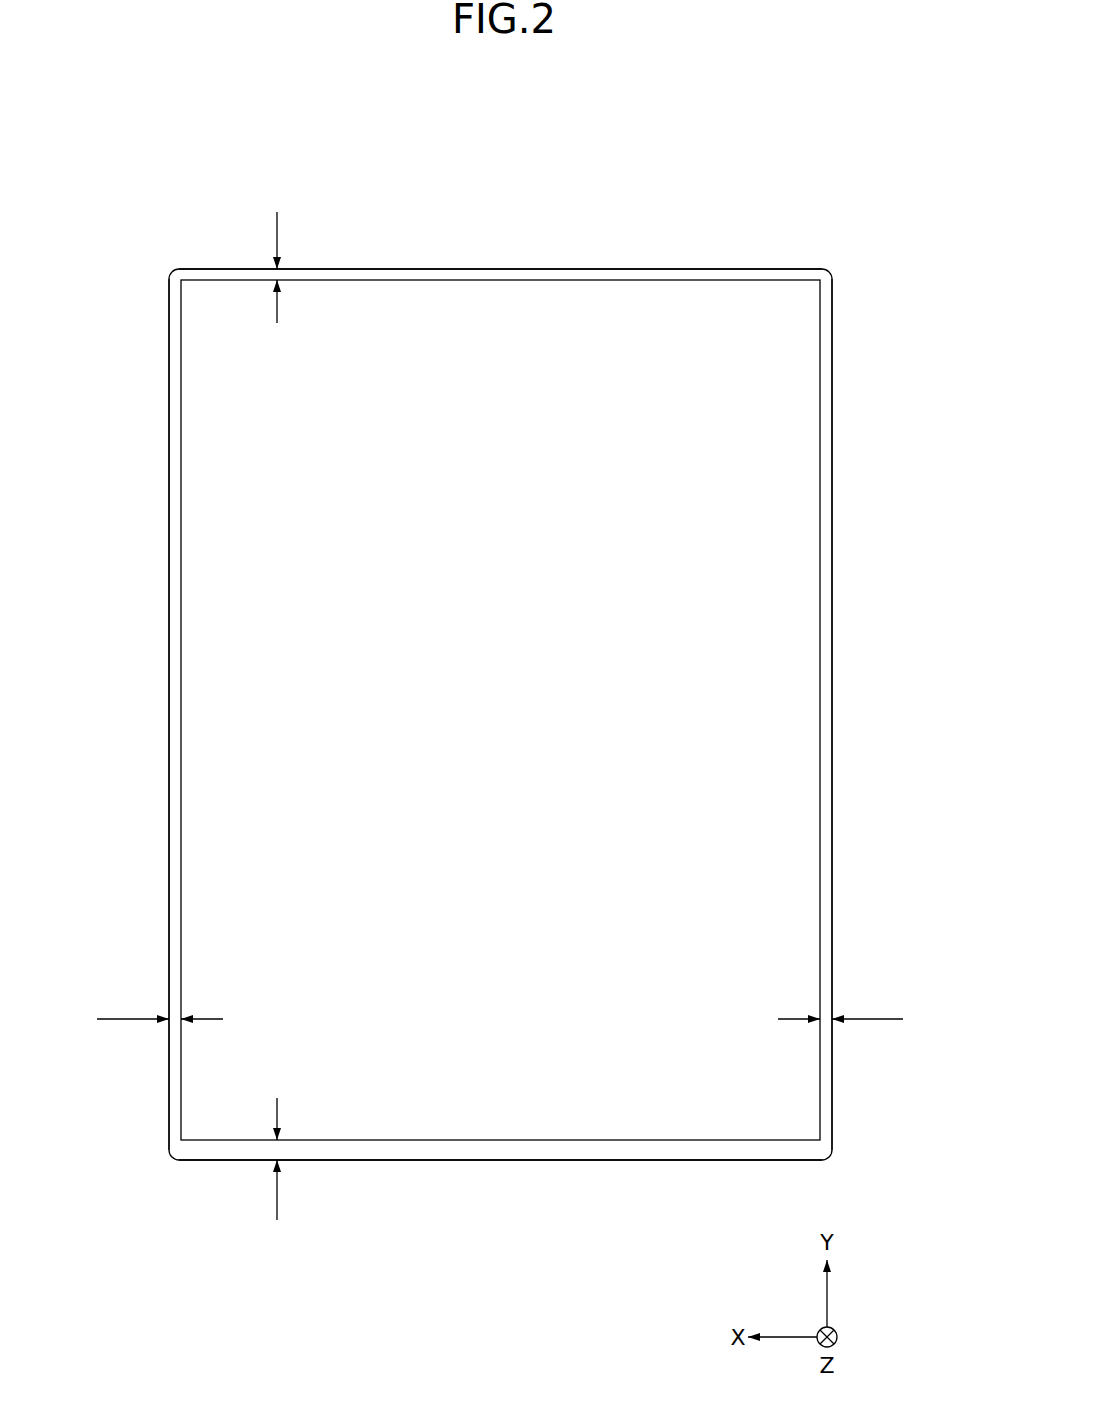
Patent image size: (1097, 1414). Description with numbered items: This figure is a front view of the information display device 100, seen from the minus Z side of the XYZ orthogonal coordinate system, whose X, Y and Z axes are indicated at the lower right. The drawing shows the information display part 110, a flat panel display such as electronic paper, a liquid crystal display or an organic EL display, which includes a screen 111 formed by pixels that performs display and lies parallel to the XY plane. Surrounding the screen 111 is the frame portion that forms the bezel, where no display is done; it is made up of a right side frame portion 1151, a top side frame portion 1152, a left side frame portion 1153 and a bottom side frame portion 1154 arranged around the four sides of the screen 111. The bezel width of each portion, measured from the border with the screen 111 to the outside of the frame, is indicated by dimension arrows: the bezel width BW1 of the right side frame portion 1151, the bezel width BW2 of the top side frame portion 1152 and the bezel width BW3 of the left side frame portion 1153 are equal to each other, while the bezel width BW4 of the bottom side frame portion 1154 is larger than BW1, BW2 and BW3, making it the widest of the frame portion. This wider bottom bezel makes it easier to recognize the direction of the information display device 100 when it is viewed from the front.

The information display device 100 is at (153, 143).
The information display part 110 is at (754, 302).
The screen 111 is at (499, 636).
The right side frame portion 1151 is at (825, 663).
The top side frame portion 1152 is at (500, 277).
The left side frame portion 1153 is at (175, 662).
The bottom side frame portion 1154 is at (502, 1152).
The bezel width of the right side frame portion BW1 is at (840, 1003).
The bezel width of the top side frame portion BW2 is at (245, 267).
The bezel width of the left side frame portion BW3 is at (160, 1003).
The bezel width of the bottom side frame portion BW4 is at (245, 1159).